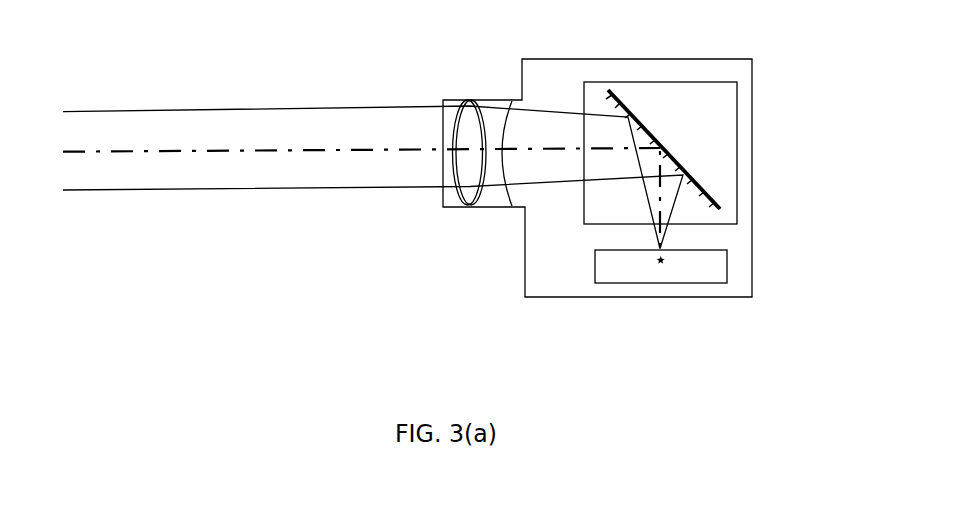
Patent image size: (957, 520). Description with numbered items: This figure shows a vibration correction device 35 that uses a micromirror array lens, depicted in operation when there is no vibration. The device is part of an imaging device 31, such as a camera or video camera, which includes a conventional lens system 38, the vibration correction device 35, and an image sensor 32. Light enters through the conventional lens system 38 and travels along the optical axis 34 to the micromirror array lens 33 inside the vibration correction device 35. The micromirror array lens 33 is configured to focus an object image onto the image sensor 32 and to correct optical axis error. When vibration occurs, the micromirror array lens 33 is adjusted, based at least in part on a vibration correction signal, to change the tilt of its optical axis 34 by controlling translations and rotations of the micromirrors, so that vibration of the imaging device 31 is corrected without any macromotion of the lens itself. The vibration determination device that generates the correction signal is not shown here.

The imaging device 31 is at (547, 80).
The image sensor 32 is at (712, 260).
The micromirror array lens 33 is at (696, 184).
The optical axis 34 is at (267, 152).
The vibration correction device 35 is at (735, 90).
The conventional lens system 38 is at (468, 207).